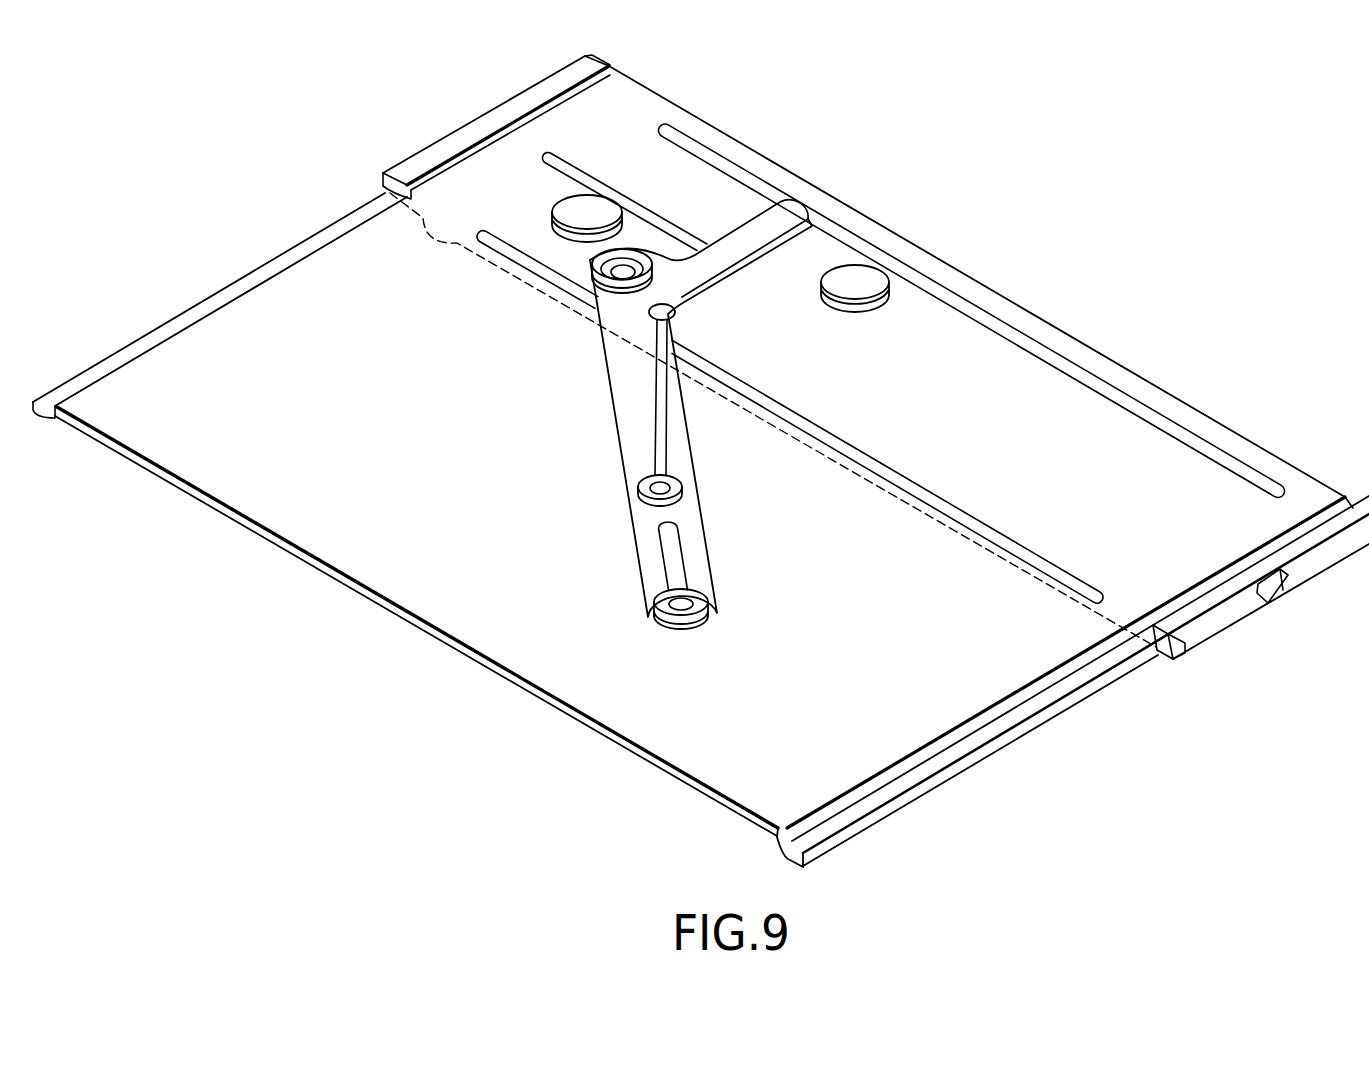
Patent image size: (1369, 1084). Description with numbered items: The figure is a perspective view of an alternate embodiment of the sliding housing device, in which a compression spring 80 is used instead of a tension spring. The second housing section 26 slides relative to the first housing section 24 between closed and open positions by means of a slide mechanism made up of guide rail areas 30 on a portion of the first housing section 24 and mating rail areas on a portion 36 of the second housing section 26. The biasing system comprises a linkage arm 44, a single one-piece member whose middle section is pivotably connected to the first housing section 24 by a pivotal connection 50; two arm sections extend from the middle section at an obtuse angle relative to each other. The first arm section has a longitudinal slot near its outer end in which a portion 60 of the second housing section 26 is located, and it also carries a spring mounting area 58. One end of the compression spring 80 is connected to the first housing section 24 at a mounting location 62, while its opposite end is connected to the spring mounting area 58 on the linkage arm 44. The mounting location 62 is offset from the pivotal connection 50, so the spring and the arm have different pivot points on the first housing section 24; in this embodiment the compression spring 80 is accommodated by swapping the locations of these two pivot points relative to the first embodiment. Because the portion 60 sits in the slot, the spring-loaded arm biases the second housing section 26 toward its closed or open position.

The first housing section 24 is at (1220, 630).
The second housing section 26 is at (415, 625).
The guide rail areas 30 is at (497, 118).
The portion of the second housing section 36 is at (492, 667).
The linkage arm 44 is at (610, 413).
The pivotal connection 50 is at (625, 275).
The spring mounting area 58 is at (672, 487).
The portion of the second housing section 60 is at (682, 613).
The mounting location 62 is at (667, 318).
The compression spring 80 is at (667, 427).